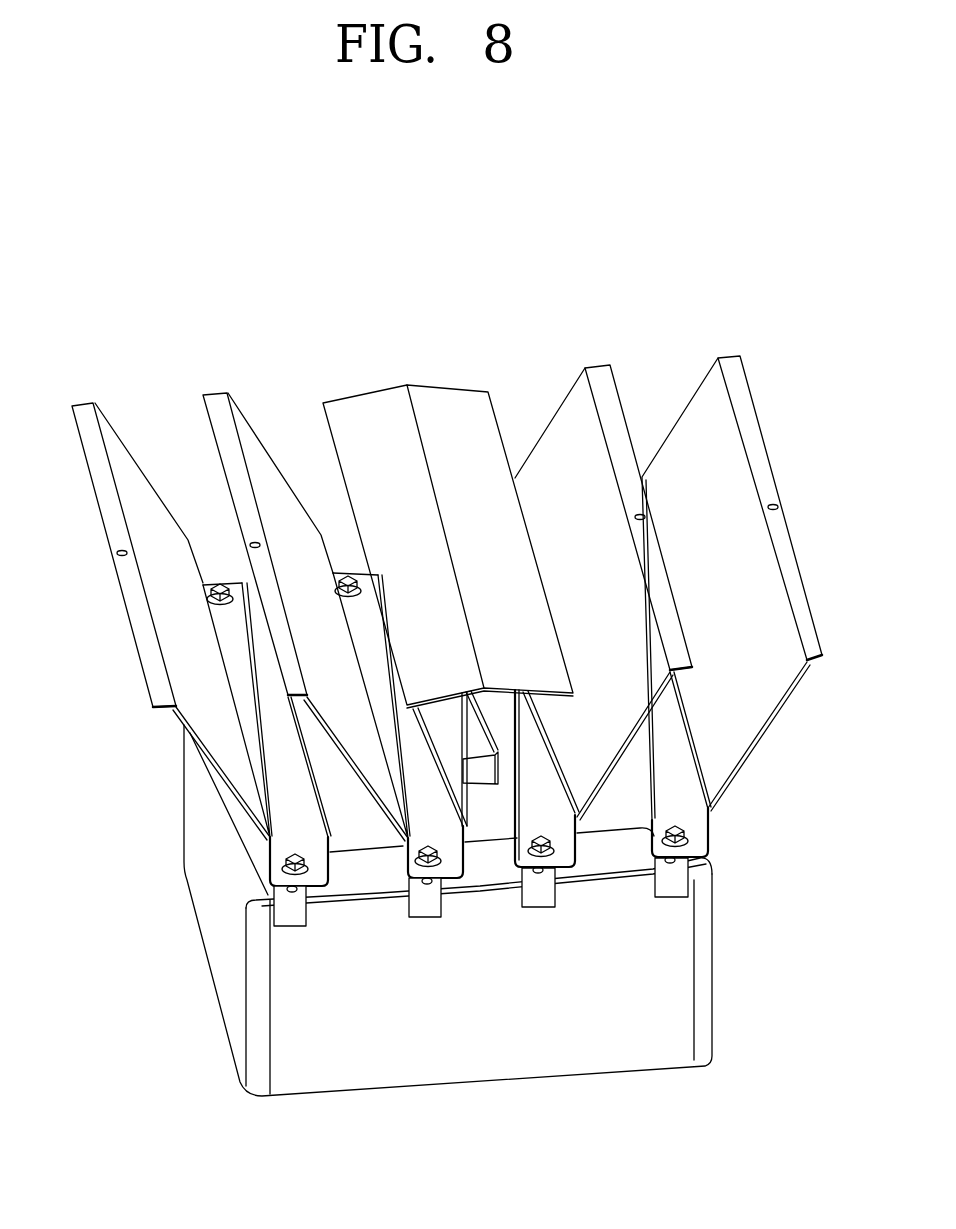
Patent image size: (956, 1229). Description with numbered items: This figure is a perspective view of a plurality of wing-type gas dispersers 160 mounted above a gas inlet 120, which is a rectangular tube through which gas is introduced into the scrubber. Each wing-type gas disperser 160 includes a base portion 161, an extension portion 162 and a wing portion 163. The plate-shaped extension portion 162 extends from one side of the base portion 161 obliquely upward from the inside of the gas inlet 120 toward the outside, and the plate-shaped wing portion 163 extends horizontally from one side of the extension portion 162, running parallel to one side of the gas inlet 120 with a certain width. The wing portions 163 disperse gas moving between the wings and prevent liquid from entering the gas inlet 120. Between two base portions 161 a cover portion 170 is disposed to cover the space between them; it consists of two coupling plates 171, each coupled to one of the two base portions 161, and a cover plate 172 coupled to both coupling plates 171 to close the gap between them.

The gas inlet 120 is at (712, 961).
The wing-type gas disperser 160 is at (433, 590).
The base portion 161 is at (268, 862).
The extension portion 162 is at (182, 662).
The wing portion 163 is at (137, 608).
The cover portion 170 is at (474, 618).
The coupling plate 171 is at (457, 780).
The cover plate 172 is at (528, 637).